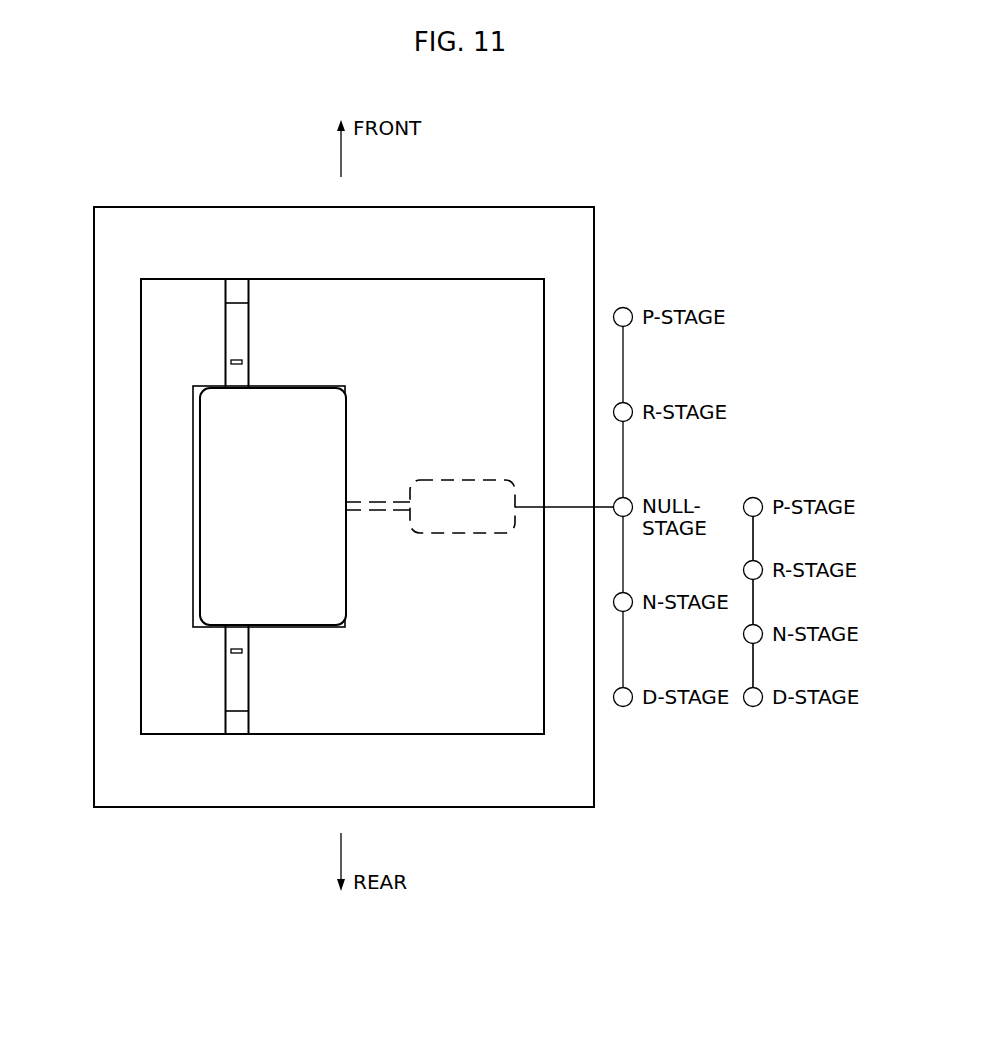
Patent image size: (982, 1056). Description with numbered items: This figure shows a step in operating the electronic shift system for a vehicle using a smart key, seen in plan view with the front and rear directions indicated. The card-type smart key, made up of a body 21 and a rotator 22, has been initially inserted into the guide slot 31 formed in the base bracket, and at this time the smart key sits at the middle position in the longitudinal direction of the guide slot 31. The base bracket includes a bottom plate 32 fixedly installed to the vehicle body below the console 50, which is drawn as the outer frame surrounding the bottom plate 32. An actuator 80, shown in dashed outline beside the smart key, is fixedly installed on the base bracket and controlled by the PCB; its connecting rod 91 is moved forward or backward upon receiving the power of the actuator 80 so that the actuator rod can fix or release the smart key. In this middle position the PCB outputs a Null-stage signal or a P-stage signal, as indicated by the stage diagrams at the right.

The body 21 is at (231, 373).
The rotator 22 is at (240, 552).
The guide slot 31 is at (247, 323).
The bottom plate 32 is at (458, 685).
The console 50 is at (185, 777).
The actuator 80 is at (471, 493).
The connecting rod 91 is at (377, 505).